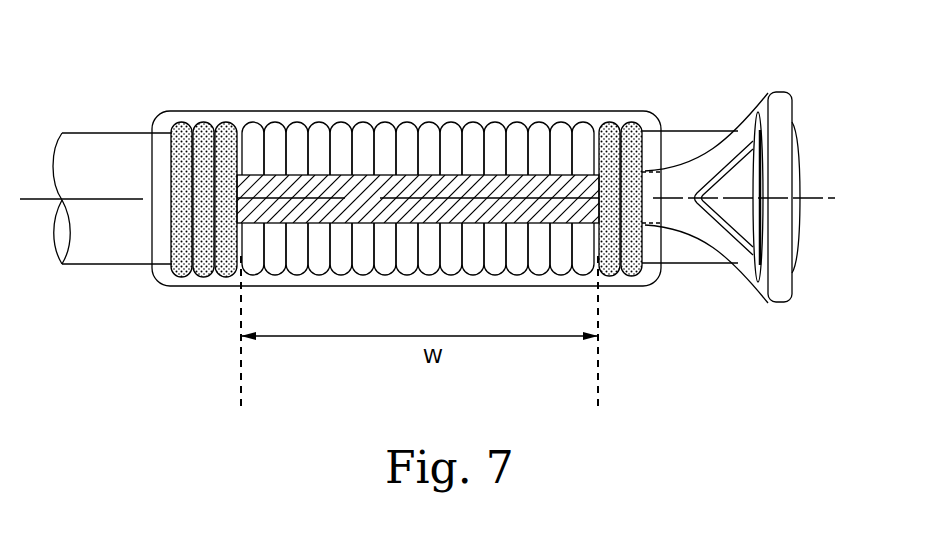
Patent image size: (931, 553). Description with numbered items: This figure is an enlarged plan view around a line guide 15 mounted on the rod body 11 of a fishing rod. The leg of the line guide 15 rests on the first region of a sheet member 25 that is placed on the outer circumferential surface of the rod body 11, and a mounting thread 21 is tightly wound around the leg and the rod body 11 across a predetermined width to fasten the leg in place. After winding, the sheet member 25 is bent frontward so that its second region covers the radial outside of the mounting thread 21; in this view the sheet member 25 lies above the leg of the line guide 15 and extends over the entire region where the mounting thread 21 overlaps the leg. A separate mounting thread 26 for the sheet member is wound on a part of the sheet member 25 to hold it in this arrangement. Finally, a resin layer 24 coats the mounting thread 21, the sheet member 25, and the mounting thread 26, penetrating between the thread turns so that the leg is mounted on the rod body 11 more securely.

The rod body 11 is at (93, 142).
The line guide 15 is at (780, 95).
The mounting thread 21 is at (432, 138).
The resin layer 24 is at (545, 112).
The sheet member 25 is at (297, 187).
The mounting thread for the sheet member 26 is at (230, 124).